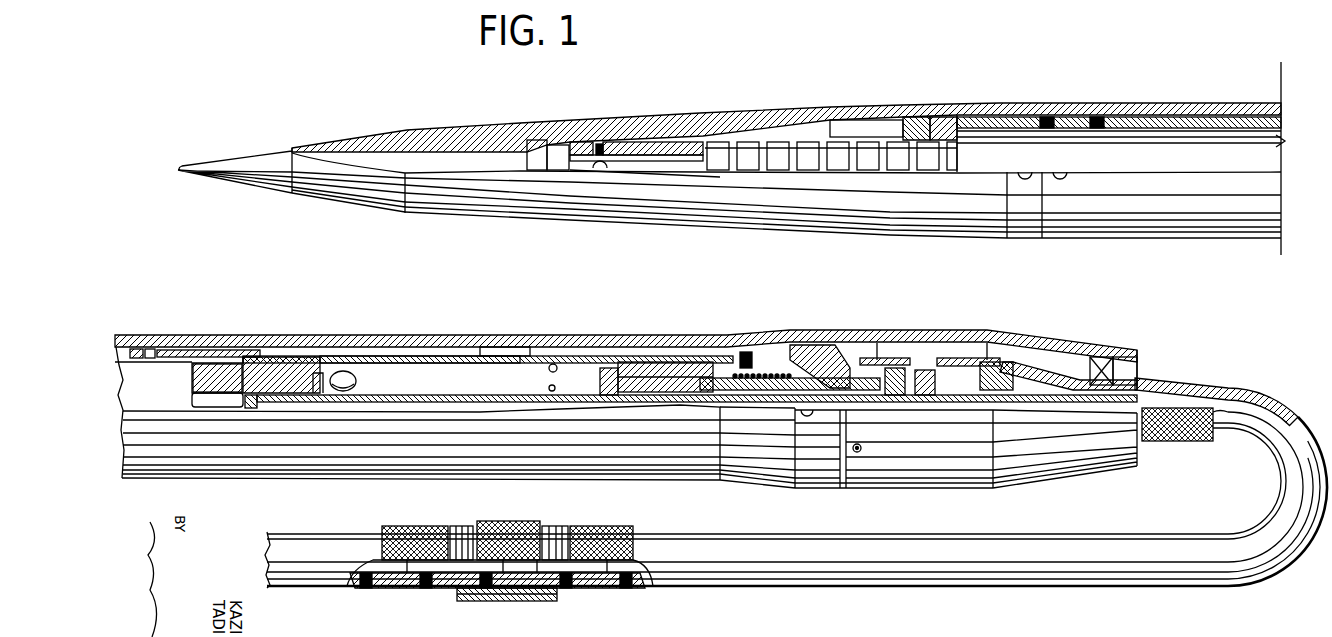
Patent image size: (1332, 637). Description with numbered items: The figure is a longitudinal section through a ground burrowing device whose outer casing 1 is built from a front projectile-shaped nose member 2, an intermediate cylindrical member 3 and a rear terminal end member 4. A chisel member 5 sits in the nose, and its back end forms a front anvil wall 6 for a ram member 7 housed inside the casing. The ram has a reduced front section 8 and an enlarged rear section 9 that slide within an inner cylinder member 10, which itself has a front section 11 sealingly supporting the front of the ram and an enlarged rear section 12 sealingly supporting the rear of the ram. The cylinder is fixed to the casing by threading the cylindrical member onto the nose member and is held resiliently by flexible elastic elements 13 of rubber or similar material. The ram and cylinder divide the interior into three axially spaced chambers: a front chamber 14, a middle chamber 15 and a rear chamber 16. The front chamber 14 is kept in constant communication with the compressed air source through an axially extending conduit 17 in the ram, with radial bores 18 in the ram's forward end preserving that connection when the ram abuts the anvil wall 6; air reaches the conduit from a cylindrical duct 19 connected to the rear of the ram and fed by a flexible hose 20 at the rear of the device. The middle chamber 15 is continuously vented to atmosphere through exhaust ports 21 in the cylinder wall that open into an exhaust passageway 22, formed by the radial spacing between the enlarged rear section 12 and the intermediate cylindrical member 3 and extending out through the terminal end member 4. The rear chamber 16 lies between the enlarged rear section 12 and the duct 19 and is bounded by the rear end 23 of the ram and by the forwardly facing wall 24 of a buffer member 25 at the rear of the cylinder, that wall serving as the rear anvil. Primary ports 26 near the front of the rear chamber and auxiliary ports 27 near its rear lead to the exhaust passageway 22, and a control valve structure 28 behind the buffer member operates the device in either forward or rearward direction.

The outer casing 1 is at (1090, 243).
The nose member 2 is at (404, 132).
The intermediate cylindrical member 3 is at (140, 336).
The rear terminal end member 4 is at (912, 336).
The chisel member 5 is at (244, 160).
The front anvil wall 6 is at (575, 165).
The ram member 7 is at (948, 135).
The reduced front section 8 is at (665, 135).
The enlarged rear section 9 is at (196, 376).
The inner cylinder member 10 is at (1194, 112).
The front section 11 is at (850, 130).
The enlarged rear section 12 is at (310, 352).
The flexible elastic elements 13 is at (1130, 118).
The front chamber 14 is at (775, 130).
The middle chamber 15 is at (935, 125).
The rear chamber 16 is at (410, 365).
The conduit 17 is at (657, 161).
The radial bores 18 is at (600, 140).
The cylindrical duct 19 is at (470, 396).
The flexible hose 20 is at (1255, 386).
The exhaust ports 21 is at (270, 346).
The exhaust passageway 22 is at (478, 347).
The rear end 23 is at (356, 374).
The forwardly facing wall 24 is at (615, 369).
The buffer member 25 is at (637, 362).
The primary ports 26 is at (358, 356).
The auxiliary ports 27 is at (558, 364).
The control valve structure 28 is at (948, 374).